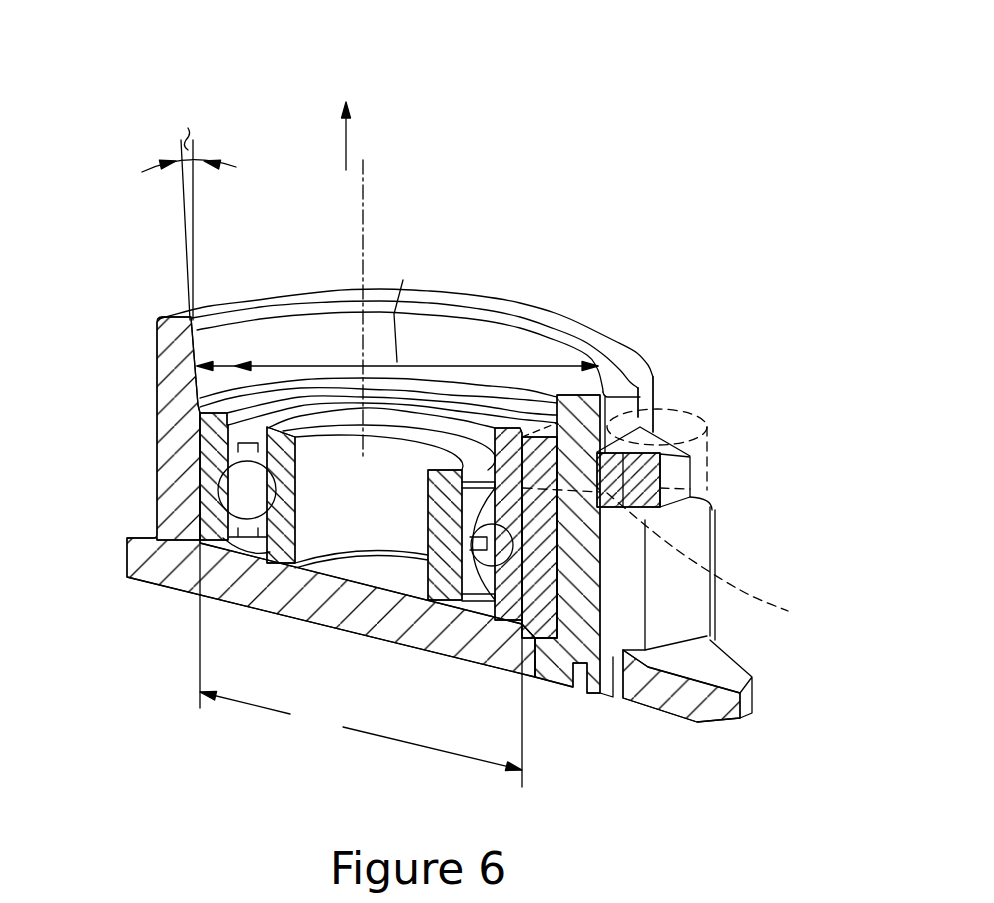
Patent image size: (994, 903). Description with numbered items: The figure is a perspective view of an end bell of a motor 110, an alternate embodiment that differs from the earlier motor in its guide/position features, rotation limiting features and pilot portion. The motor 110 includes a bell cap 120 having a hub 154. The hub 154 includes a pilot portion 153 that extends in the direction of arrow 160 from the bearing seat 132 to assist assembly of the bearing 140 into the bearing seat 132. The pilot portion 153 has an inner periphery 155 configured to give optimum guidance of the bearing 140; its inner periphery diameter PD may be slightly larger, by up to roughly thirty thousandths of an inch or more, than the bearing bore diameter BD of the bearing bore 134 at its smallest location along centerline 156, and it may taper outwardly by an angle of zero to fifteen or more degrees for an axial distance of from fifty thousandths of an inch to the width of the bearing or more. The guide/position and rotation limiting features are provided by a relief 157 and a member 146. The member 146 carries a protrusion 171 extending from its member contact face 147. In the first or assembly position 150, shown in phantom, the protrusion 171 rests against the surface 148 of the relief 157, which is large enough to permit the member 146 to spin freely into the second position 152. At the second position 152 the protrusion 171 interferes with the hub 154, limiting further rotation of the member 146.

The motor 110 is at (200, 82).
The bell cap 120 is at (157, 270).
The bearing seat 132 is at (497, 345).
The bearing bore 134 is at (200, 449).
The bearing 140 is at (223, 510).
The member 146 is at (662, 448).
The member contact face 147 is at (490, 540).
The surface 148 is at (612, 500).
The first or assembly position 150 is at (680, 519).
The second position 152 is at (690, 489).
The pilot portion 153 is at (254, 312).
The hub 154 is at (668, 350).
The inner periphery 155 is at (291, 339).
The centerline 156 is at (364, 178).
The relief 157 is at (703, 465).
The arrow 160 is at (346, 128).
The protrusion 171 is at (530, 483).